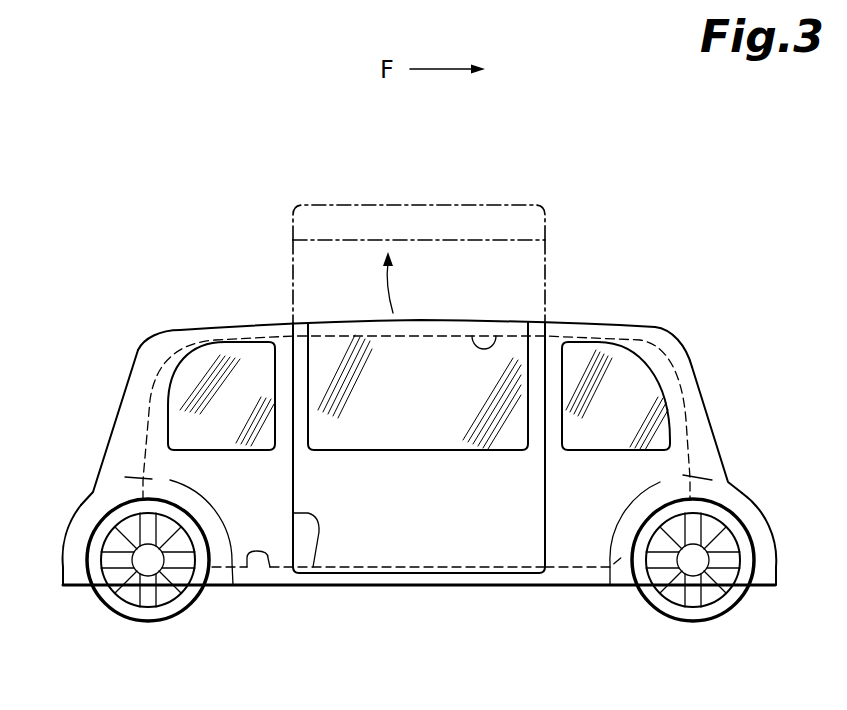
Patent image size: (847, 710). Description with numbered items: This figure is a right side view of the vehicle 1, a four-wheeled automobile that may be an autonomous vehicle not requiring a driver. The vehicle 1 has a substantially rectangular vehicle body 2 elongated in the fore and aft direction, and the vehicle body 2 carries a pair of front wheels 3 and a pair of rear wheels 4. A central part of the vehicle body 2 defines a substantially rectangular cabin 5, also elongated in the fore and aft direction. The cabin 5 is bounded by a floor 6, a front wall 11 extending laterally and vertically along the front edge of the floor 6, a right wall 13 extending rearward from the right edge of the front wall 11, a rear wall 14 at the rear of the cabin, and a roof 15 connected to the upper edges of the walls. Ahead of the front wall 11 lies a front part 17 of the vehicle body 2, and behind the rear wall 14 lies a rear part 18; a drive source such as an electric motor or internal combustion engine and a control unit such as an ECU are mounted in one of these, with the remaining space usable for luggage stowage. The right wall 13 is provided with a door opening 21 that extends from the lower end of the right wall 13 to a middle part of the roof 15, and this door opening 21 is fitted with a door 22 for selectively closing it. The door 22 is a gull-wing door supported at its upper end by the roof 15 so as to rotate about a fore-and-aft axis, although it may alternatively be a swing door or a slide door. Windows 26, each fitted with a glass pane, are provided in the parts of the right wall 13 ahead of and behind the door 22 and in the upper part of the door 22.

The vehicle 1 is at (646, 236).
The vehicle body 2 is at (689, 336).
The front wheels 3 is at (705, 610).
The rear wheels 4 is at (165, 613).
The cabin 5 is at (495, 336).
The floor 6 is at (247, 570).
The front wall 11 is at (712, 423).
The right wall 13 is at (580, 537).
The rear wall 14 is at (128, 382).
The roof 15 is at (428, 320).
The front part 17 is at (757, 517).
The rear part 18 is at (83, 523).
The door opening 21 is at (313, 567).
The door 22 is at (431, 205).
The windows 26 is at (248, 360).